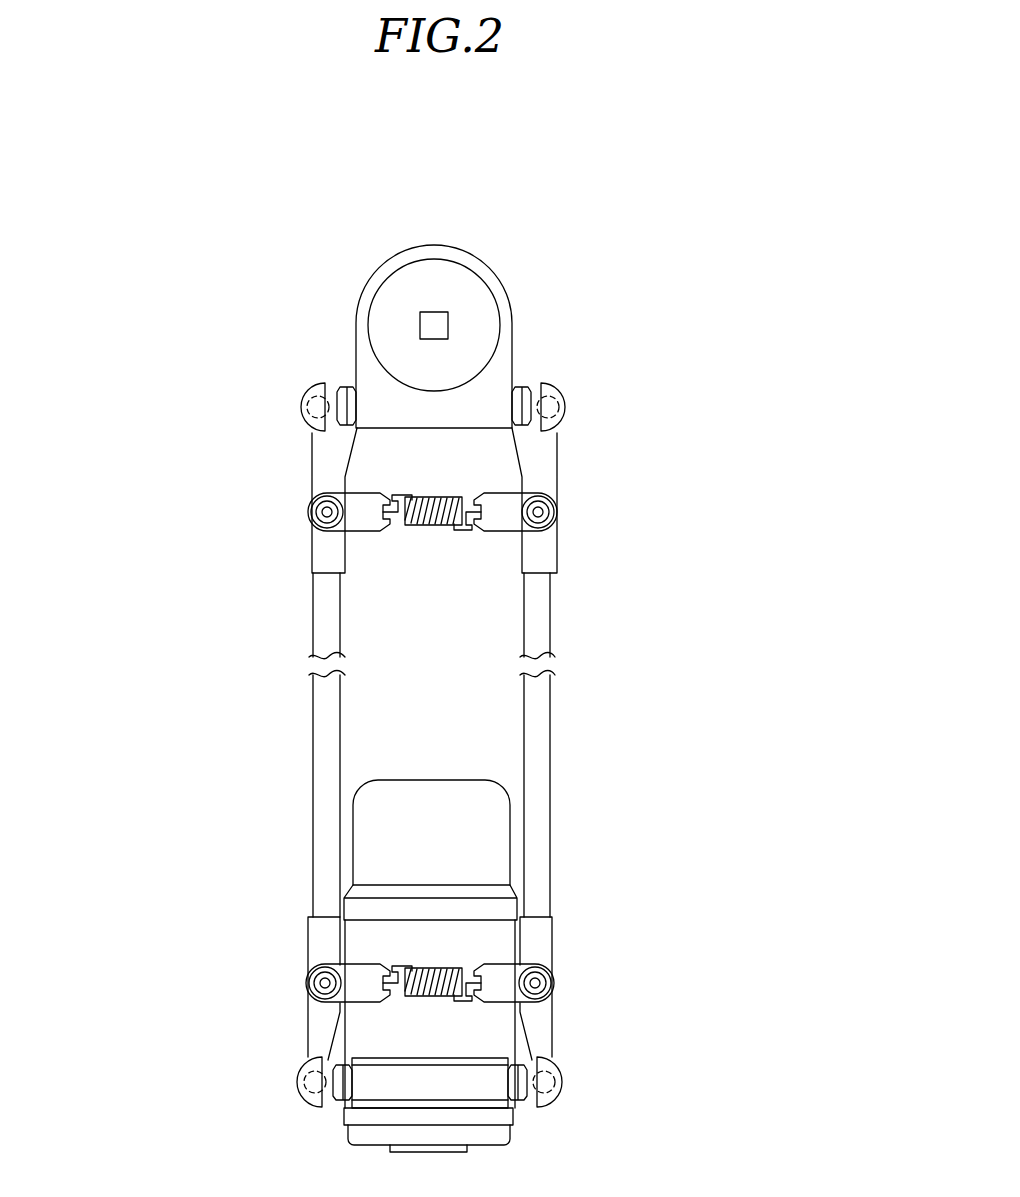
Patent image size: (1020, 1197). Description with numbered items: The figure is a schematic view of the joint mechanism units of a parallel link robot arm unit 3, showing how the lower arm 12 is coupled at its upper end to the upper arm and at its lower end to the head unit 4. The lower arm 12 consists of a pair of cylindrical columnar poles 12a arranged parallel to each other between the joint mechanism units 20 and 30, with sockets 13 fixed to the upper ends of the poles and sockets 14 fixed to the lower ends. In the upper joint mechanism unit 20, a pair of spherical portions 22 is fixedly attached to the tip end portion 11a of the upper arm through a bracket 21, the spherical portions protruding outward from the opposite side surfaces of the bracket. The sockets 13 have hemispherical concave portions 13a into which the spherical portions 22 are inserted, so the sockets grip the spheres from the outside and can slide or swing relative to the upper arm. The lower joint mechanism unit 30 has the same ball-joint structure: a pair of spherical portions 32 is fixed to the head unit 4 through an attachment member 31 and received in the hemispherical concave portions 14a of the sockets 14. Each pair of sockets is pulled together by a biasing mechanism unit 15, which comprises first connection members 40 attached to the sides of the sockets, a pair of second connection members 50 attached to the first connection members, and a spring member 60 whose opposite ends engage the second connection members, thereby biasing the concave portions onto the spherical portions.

The arm unit 3 is at (596, 197).
The head unit 4 is at (360, 768).
The tip end portion of the upper arm 11a is at (463, 273).
The lower arm 12 is at (667, 647).
The cylindrical columnar poles 12a is at (549, 633).
The sockets 13 is at (312, 562).
The hemispherical concave portions 13a is at (307, 390).
The sockets 14 is at (320, 933).
The hemispherical concave portions 14a is at (298, 1078).
The biasing mechanism unit 15 is at (432, 546).
The joint mechanism unit 20 is at (603, 282).
The bracket 21 is at (355, 325).
The spherical portions 22 is at (337, 388).
The joint mechanism unit 30 is at (578, 1134).
The attachment member 31 is at (472, 1092).
The spherical portions 32 is at (322, 1058).
The first connection members 40 is at (311, 512).
The second connection members 50 is at (363, 498).
The spring member 60 is at (437, 500).